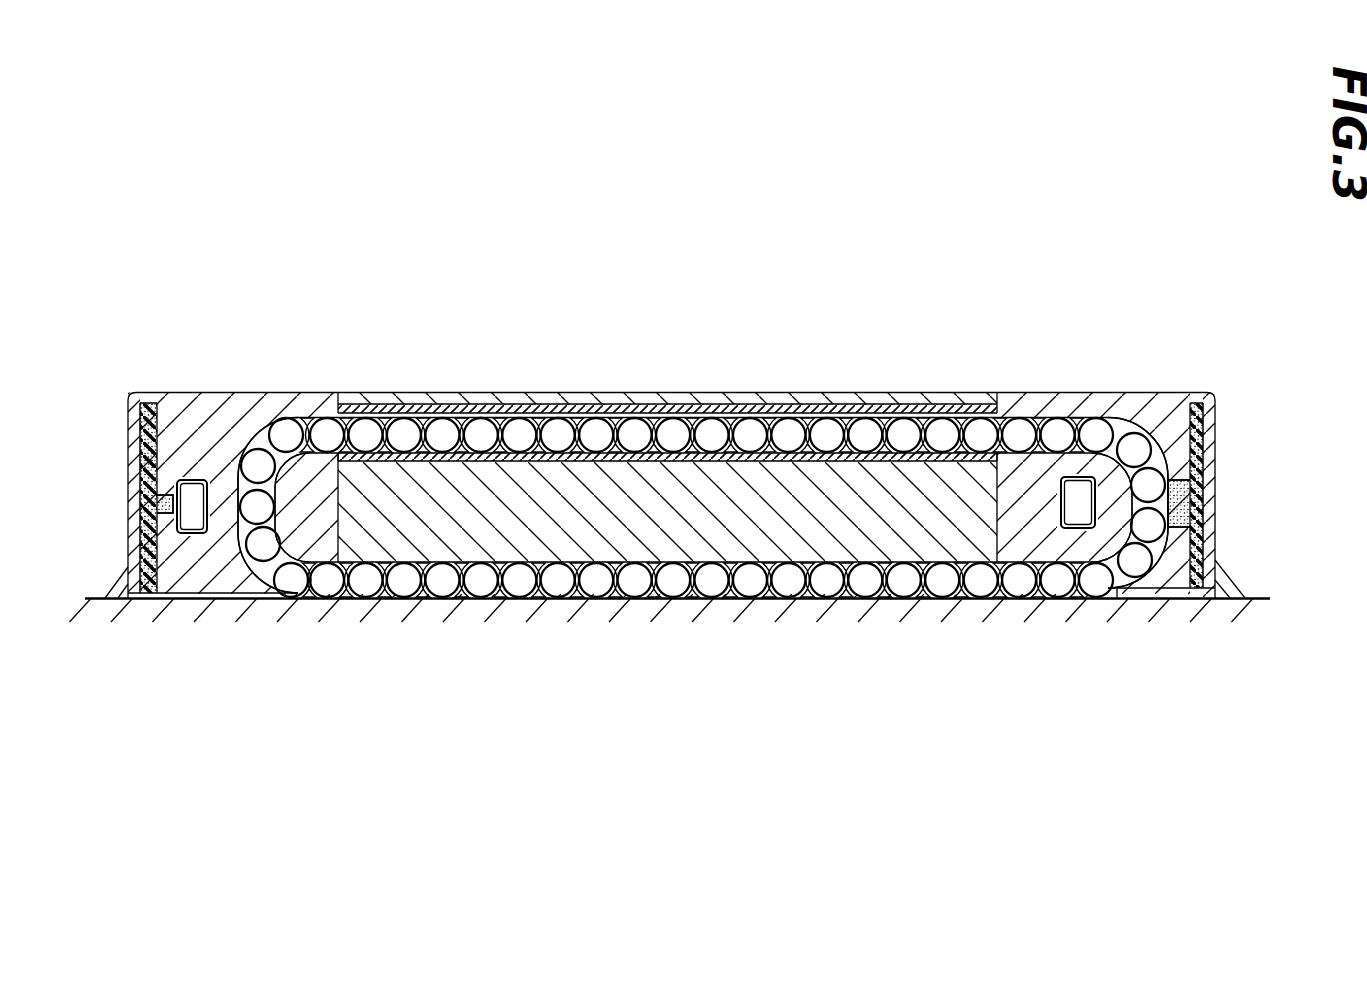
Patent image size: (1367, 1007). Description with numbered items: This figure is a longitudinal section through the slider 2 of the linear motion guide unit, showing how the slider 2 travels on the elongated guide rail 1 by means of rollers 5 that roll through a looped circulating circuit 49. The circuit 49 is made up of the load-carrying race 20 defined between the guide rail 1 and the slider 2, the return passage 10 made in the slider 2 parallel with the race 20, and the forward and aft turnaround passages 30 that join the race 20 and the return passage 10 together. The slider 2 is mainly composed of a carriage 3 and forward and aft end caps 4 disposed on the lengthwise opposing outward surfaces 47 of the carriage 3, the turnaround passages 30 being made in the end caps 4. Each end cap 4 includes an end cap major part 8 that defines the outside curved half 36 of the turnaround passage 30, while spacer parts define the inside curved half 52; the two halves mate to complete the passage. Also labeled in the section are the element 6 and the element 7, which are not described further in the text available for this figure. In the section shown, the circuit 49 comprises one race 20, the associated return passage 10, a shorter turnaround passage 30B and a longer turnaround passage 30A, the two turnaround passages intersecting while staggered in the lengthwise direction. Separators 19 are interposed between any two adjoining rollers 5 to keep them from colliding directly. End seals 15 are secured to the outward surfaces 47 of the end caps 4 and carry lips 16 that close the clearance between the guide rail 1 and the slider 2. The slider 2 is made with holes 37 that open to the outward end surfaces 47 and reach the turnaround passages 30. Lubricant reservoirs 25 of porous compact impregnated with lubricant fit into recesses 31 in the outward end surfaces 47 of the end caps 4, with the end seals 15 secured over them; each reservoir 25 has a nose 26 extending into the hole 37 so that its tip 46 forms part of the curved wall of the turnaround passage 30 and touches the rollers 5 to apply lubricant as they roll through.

The guide rail 1 is at (642, 606).
The slider 2 is at (657, 392).
The carriage 3 is at (713, 503).
The end cap 4 is at (212, 440).
The roller 5 is at (523, 420).
The upper hatched portion of rail 6 is at (800, 410).
The central block 7 is at (1020, 490).
The end cap major part 8 is at (165, 494).
The return passage 10 is at (624, 410).
The end seal 15 is at (130, 400).
The lip 16 is at (118, 597).
The separator 19 is at (888, 420).
The load-carrying race 20 is at (717, 601).
The lubricant reservoir 25 is at (150, 470).
The nose 26 is at (1180, 530).
The turnaround passage 30 is at (250, 470).
The longer turnaround passage 30A is at (185, 545).
The shorter turnaround passage 30B is at (243, 575).
The recess 31 is at (146, 402).
The outside curved half 36 is at (1162, 440).
The hole 37 is at (165, 512).
The tip 46 is at (198, 500).
The outward surface 47 is at (134, 450).
The circulating circuit 49 is at (408, 415).
The inside curved half 52 is at (292, 430).